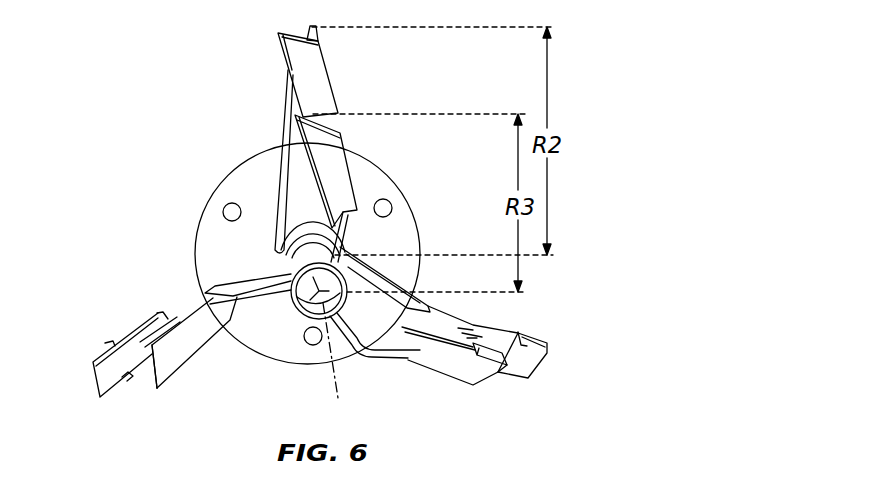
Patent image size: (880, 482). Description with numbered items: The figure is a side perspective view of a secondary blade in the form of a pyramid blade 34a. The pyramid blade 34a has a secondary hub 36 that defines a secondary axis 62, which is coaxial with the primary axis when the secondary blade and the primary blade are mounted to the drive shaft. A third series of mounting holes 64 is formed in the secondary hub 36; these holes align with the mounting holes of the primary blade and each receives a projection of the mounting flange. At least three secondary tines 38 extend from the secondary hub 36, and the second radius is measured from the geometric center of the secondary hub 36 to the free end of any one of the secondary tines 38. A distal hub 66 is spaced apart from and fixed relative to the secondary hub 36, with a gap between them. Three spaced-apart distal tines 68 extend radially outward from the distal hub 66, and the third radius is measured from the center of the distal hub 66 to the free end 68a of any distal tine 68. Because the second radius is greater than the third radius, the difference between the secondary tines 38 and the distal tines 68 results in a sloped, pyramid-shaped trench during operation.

The pyramid blade 34a is at (148, 122).
The secondary hub 36 is at (410, 244).
The secondary tines 38 is at (317, 82).
The secondary axis 62 is at (300, 315).
The third series of mounting holes 64 is at (232, 212).
The distal hub 66 is at (290, 251).
The distal tines 68 is at (343, 172).
The free end 68a is at (300, 138).